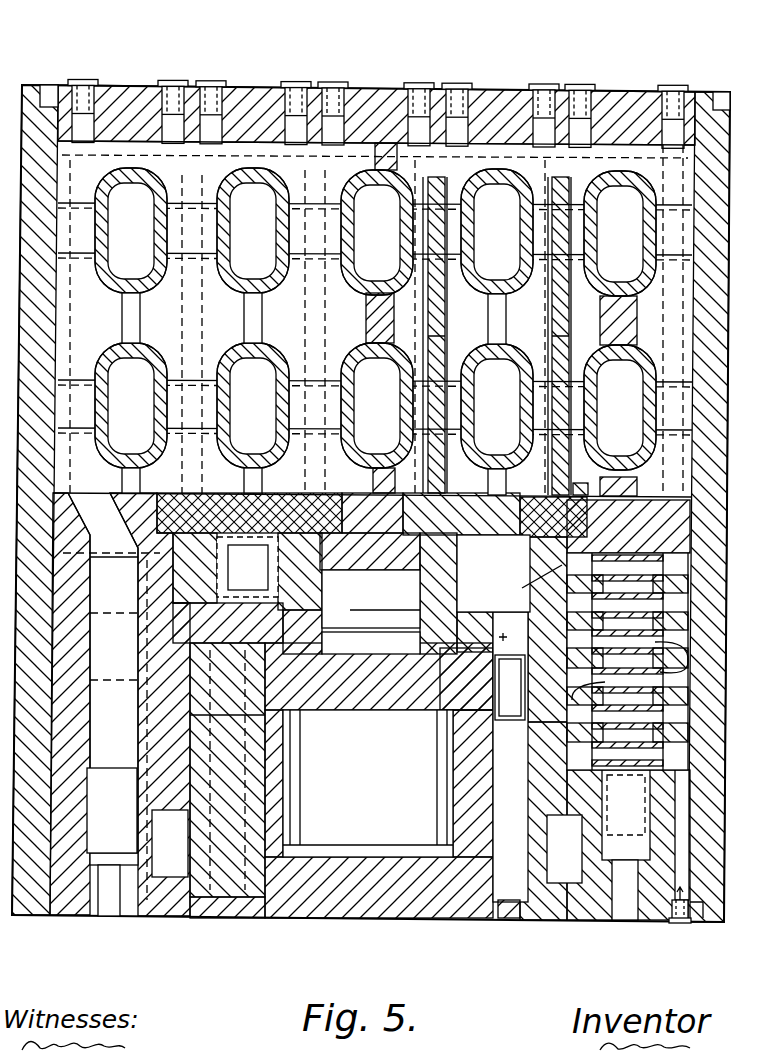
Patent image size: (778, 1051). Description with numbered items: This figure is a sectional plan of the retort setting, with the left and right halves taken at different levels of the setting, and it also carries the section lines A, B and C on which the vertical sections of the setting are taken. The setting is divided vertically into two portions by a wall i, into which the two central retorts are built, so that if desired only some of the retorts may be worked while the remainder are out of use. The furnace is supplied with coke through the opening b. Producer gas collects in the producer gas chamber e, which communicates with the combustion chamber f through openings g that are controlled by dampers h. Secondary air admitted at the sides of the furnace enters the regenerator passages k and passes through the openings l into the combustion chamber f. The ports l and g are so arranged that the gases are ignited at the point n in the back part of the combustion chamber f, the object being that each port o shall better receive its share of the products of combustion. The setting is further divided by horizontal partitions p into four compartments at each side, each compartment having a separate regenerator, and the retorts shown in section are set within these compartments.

The horizontal partitions p is at (150, 362).
The wall i is at (398, 175).
The port o is at (548, 500).
The combustion chamber f is at (373, 573).
The producer gas chamber e is at (371, 599).
The openings g is at (440, 654).
The dampers h is at (510, 687).
The ignition point n is at (499, 613).
The openings l is at (537, 583).
The opening b is at (368, 783).
The regenerator passages k is at (657, 565).
The section line A- A is at (366, 948).
The section line B- B is at (508, 948).
The section line C- C is at (623, 948).